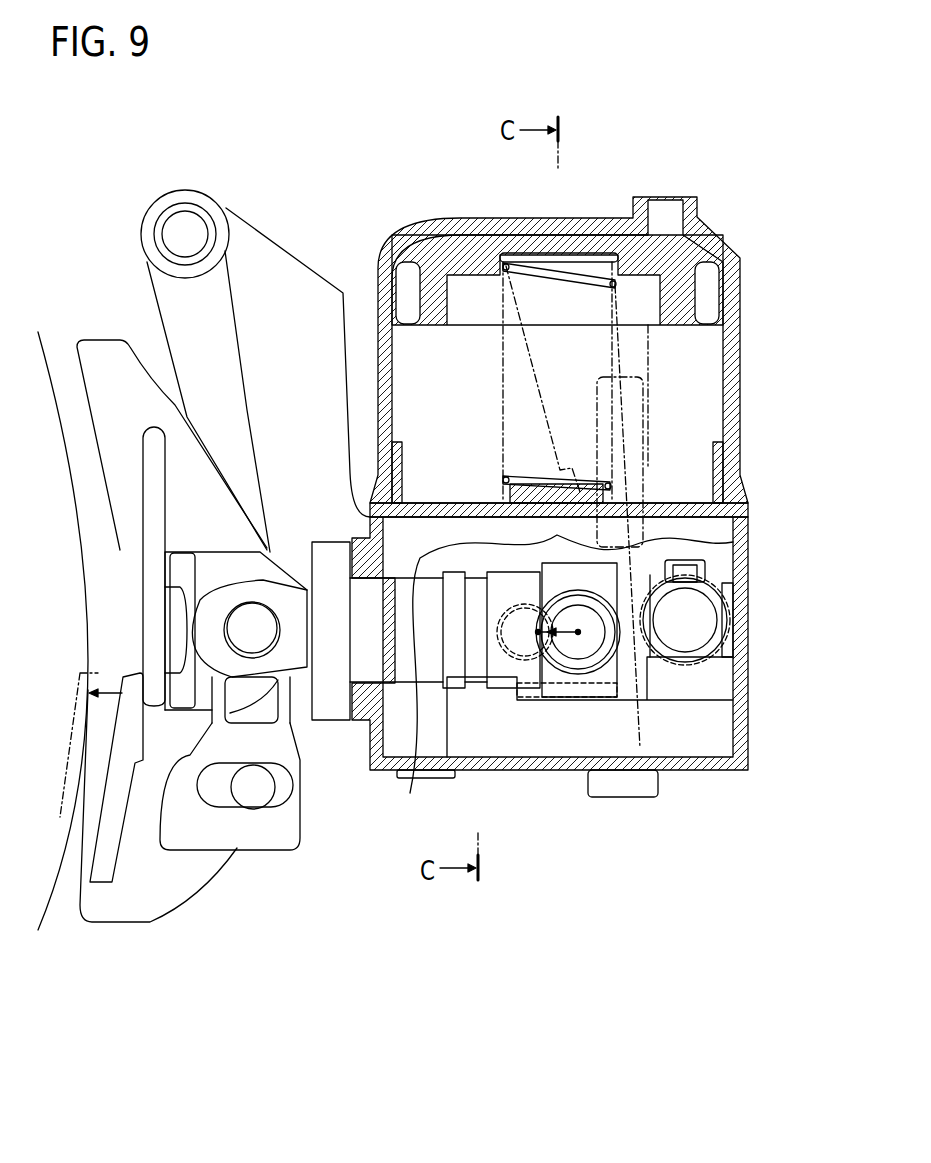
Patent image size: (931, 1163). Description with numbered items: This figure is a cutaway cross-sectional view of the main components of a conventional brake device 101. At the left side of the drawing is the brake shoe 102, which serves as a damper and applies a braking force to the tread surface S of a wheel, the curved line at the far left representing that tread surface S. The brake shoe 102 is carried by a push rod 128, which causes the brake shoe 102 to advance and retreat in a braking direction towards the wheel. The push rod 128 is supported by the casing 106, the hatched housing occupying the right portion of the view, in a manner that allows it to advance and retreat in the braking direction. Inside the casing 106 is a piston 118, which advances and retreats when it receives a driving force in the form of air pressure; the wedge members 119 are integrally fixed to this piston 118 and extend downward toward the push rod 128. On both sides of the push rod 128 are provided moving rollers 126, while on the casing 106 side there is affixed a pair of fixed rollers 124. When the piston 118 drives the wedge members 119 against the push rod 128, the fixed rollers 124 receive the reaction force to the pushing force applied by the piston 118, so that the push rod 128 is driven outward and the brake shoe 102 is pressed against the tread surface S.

The brake device 101 is at (593, 453).
The brake shoe 102 is at (146, 892).
The casing 106 is at (744, 677).
The piston 118 is at (587, 243).
The wedge members 119 is at (640, 352).
The fixed rollers 124 is at (724, 622).
The moving rollers 126 is at (577, 663).
The push rod 128 is at (322, 530).
The tread surface S is at (52, 897).